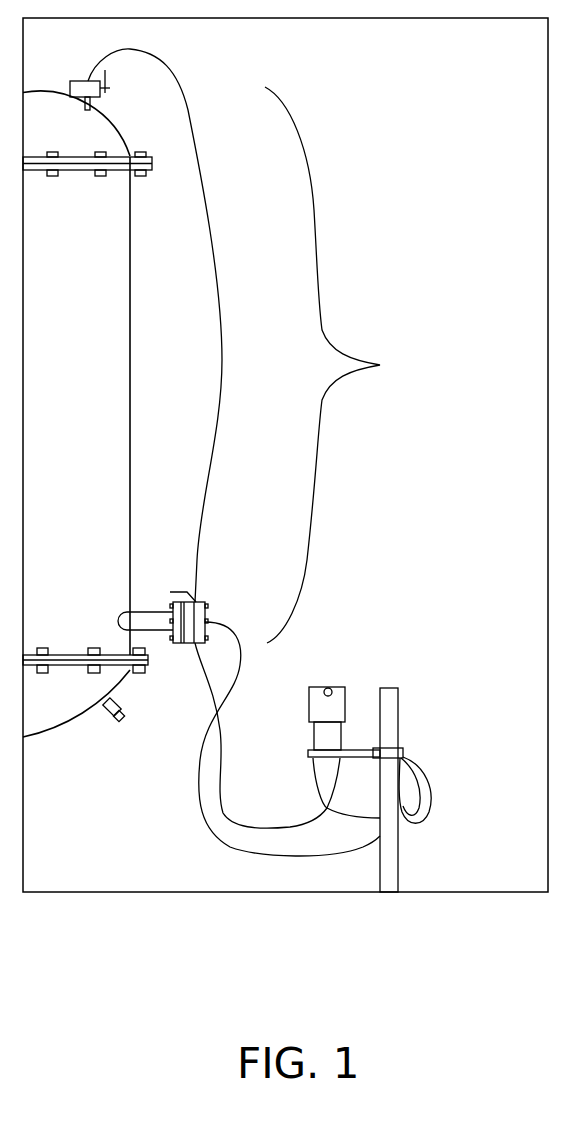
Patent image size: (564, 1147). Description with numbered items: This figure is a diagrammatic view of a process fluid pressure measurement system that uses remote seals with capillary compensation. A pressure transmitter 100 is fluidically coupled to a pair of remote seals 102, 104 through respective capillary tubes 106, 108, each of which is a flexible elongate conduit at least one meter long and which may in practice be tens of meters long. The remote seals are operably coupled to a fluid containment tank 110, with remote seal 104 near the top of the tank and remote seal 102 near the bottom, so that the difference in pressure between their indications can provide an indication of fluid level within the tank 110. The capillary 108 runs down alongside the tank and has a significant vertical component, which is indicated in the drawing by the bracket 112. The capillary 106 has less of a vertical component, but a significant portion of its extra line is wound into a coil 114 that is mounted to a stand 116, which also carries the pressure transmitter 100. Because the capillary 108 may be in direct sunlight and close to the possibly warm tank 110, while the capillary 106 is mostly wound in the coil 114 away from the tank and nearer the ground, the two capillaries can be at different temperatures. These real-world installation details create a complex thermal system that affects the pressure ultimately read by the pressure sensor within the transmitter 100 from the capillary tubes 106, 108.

The pressure transmitter 100 is at (340, 687).
The remote seal 102 is at (177, 645).
The remote seal 104 is at (70, 90).
The capillary tube 106 is at (238, 675).
The capillary tube 108 is at (217, 297).
The fluid containment tank 110 is at (130, 397).
The bracket 112 is at (350, 365).
The coil 114 is at (432, 798).
The stand 116 is at (398, 723).